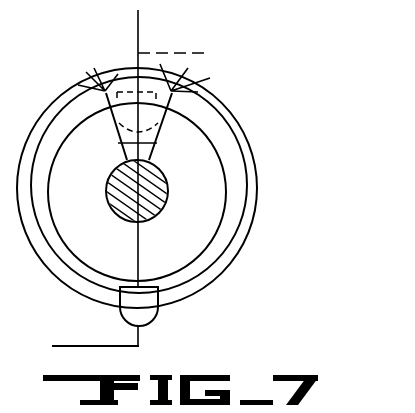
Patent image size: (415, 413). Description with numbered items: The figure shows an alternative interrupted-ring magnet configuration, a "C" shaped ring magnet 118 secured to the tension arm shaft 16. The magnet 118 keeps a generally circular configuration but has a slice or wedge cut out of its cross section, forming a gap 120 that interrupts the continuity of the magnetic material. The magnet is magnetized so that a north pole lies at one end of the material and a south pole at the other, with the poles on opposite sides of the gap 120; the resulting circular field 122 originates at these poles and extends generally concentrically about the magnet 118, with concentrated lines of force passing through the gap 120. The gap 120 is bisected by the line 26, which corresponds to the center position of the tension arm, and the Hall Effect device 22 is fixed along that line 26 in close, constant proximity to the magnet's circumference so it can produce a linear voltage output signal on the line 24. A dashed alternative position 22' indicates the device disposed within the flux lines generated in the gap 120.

The tension arm shaft 16 is at (160, 191).
The Hall Effect device 22 is at (168, 313).
The Hall Effect device 22' is at (187, 90).
The line 24 is at (86, 346).
The line 26 is at (139, 37).
The C shaped ring magnet 118 is at (212, 145).
The gap 120 is at (112, 90).
The circular field 122 is at (232, 240).